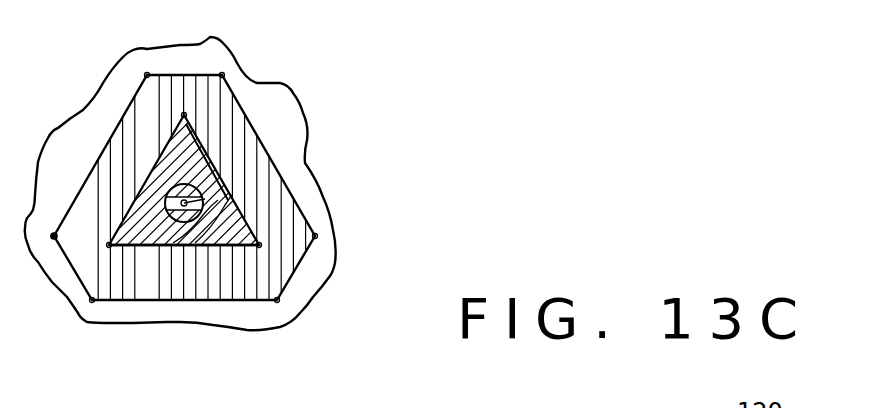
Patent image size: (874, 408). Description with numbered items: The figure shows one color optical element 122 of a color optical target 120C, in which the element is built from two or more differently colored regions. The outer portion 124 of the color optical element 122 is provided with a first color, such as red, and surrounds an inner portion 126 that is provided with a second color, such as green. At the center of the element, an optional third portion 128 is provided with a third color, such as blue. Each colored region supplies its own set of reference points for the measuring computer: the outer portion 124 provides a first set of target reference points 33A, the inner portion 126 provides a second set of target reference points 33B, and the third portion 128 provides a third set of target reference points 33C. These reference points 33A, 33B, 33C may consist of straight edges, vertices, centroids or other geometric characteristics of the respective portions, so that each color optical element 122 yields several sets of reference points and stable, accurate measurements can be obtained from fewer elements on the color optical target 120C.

The color optical target 120C is at (124, 78).
The color optical element 122 is at (245, 110).
The outer portion 124 is at (235, 155).
The inner portion 126 is at (218, 213).
The third portion 128 is at (172, 245).
The first set of target reference points 33A is at (122, 95).
The second set of target reference points 33B is at (184, 115).
The third set of target reference points 33C is at (236, 245).